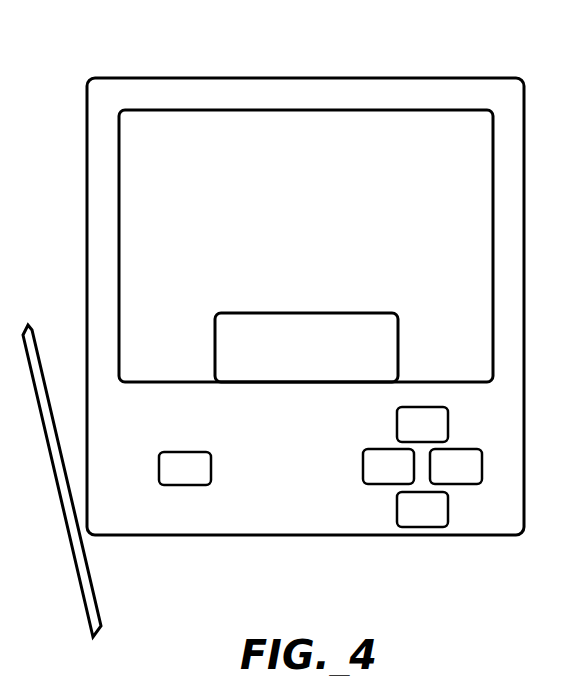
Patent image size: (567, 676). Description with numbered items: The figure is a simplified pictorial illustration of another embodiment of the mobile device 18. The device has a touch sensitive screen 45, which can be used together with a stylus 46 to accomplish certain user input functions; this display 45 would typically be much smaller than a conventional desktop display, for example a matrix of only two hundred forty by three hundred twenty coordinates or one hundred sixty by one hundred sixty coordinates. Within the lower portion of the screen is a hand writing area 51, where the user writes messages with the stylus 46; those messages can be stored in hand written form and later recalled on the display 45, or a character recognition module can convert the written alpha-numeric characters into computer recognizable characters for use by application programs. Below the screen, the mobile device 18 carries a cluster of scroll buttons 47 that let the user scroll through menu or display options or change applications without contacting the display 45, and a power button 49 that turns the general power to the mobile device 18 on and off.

The mobile device 18 is at (364, 58).
The touch sensitive screen 45 is at (215, 132).
The hand writing area 51 is at (312, 313).
The power button 49 is at (187, 470).
The scroll buttons 47 is at (375, 520).
The stylus 46 is at (95, 597).